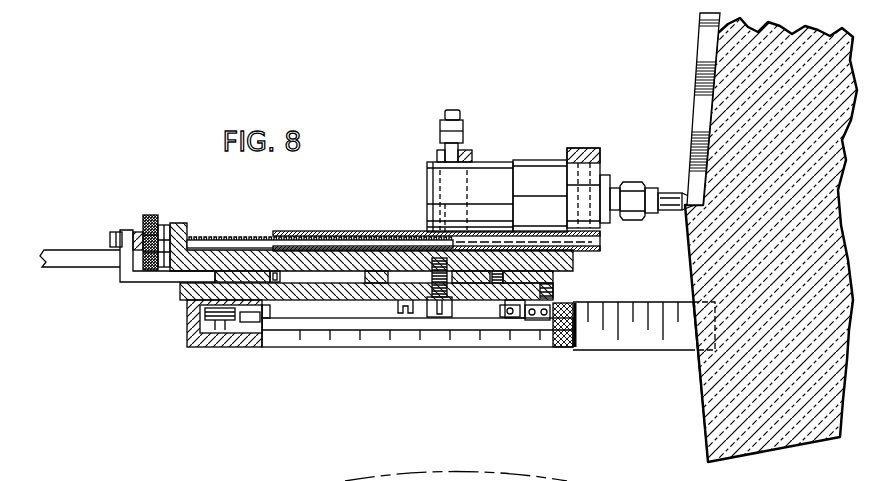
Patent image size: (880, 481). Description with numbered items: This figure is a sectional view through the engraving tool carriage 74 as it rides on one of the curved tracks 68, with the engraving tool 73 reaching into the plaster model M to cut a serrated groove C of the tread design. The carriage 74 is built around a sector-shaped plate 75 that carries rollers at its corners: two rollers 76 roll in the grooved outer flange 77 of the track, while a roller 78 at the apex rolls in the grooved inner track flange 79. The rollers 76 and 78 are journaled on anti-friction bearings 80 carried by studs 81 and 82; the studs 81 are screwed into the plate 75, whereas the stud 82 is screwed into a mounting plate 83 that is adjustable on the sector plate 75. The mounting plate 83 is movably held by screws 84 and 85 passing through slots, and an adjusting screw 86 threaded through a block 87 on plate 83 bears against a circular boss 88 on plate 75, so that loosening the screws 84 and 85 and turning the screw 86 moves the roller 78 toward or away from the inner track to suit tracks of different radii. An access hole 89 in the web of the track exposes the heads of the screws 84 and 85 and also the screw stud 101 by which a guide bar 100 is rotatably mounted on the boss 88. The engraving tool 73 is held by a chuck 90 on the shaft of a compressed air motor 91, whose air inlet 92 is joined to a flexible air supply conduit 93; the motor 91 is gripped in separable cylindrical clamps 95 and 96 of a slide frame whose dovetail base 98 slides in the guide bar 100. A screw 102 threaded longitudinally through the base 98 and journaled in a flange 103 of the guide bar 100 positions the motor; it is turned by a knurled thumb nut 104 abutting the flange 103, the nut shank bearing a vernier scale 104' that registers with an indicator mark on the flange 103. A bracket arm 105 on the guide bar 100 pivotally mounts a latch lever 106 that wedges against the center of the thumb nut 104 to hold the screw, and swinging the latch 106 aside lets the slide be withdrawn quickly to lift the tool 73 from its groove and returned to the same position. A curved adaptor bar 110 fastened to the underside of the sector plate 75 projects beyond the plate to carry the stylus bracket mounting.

The curved track 68 is at (191, 348).
The engraving tool 73 is at (674, 212).
The carriage 74 is at (369, 229).
The sector-shaped plate 75 is at (180, 290).
The rollers 76 is at (230, 332).
The grooved outer flange 77 is at (192, 306).
The roller 78 is at (512, 315).
The grooved inner track flange 79 is at (576, 312).
The anti-friction bearings 80 is at (535, 322).
The studs 81 is at (250, 323).
The stud 82 is at (549, 328).
The mounting plate 83 is at (468, 284).
The screw 84 is at (405, 314).
The screw 85 is at (504, 316).
The adjusting screw 86 is at (551, 291).
The block 87 is at (560, 282).
The circular boss 88 is at (508, 268).
The access hole 89 is at (270, 318).
The chuck 90 is at (633, 184).
The compressed air motor 91 is at (527, 161).
The air inlet 92 is at (437, 153).
The flexible air supply conduit 93 is at (443, 117).
The cylindrical clamp 95 is at (468, 150).
The cylindrical clamp 96 is at (592, 150).
The dovetail base 98 is at (300, 231).
The guide bar 100 is at (218, 258).
The screw stud 101 is at (437, 318).
The screw 102 is at (255, 241).
The flange 103 is at (164, 227).
The knurled thumb nut 104 is at (120, 224).
The vernier scale 104' is at (130, 205).
The bracket arm 105 is at (119, 279).
The latch lever 106 is at (135, 235).
The curved adaptor bar 110 is at (263, 277).
The serrated groove C is at (700, 52).
The plaster model M is at (801, 438).